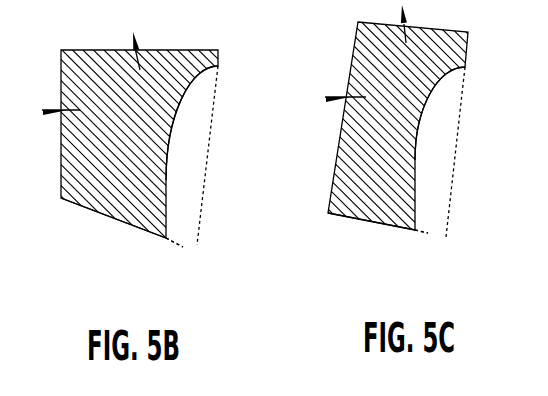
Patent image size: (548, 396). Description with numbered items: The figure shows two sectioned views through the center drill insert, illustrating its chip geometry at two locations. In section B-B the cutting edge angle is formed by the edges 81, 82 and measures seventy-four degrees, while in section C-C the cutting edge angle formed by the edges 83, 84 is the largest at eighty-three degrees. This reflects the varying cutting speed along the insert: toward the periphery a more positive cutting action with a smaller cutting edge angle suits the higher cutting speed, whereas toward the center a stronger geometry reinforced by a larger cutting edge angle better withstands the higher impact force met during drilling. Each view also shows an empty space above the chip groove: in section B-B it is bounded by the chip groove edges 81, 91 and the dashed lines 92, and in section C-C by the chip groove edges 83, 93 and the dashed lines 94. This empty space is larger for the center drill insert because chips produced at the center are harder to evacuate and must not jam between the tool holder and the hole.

In FIG. 5B, the edge 81 is at (168, 220).
In FIG. 5B, the edge 82 is at (131, 231).
In FIG. 5B, the chip groove edge 91 is at (186, 76).
In FIG. 5B, the dashed lines 92 is at (201, 229).
In FIG. 5C, the edge 83 is at (420, 206).
In FIG. 5C, the edge 84 is at (392, 232).
In FIG. 5C, the chip groove edge 93 is at (425, 80).
In FIG. 5C, the dashed lines 94 is at (451, 218).